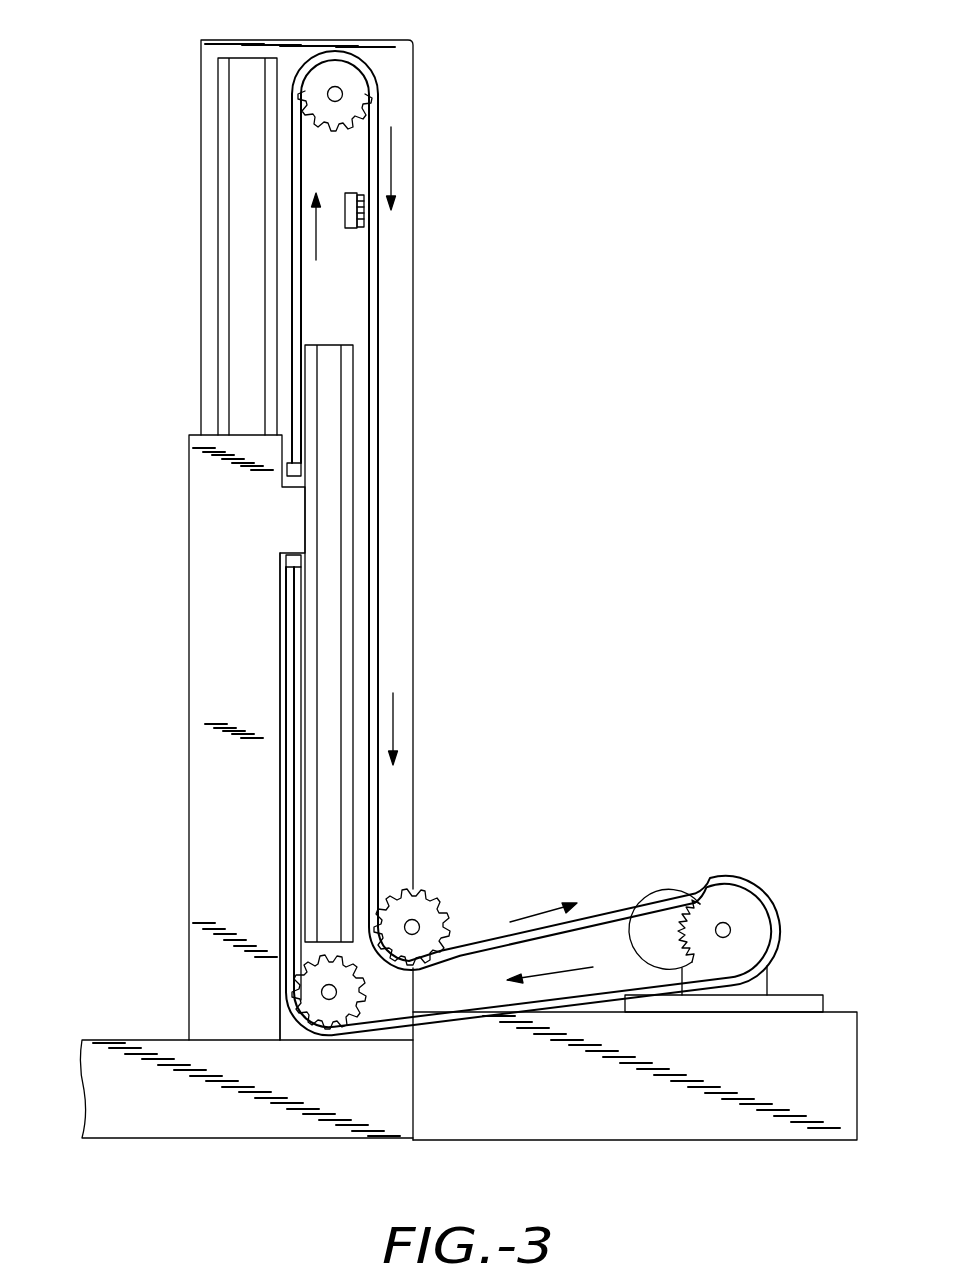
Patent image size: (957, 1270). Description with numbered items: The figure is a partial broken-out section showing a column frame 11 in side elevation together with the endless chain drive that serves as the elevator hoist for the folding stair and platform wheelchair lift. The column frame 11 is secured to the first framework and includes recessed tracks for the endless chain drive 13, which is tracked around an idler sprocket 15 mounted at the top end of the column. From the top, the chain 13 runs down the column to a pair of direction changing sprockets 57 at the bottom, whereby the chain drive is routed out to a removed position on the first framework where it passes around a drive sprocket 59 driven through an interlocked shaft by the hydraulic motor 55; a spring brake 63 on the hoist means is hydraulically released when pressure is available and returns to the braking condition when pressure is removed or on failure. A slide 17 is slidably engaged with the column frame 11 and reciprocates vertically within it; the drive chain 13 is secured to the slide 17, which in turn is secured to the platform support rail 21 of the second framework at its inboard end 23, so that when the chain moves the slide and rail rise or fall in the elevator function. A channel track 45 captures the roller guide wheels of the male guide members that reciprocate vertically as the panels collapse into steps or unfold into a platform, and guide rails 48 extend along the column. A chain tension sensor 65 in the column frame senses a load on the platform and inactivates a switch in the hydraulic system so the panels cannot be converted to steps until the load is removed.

The column frame 11 is at (418, 93).
The endless chain drive 13 is at (628, 912).
The idler sprocket 15 is at (352, 80).
The slide 17 is at (212, 559).
The platform support rail 21 is at (104, 1082).
The inboard end 23 is at (412, 1100).
The channel track 45 is at (332, 357).
The guide rails 48 is at (222, 253).
The hydraulic motor 55 is at (742, 885).
The spring brake 63 is at (742, 885).
The direction changing sprocket 57 is at (425, 908).
The drive sprocket 59 is at (747, 934).
The chain tension sensor 65 is at (358, 236).